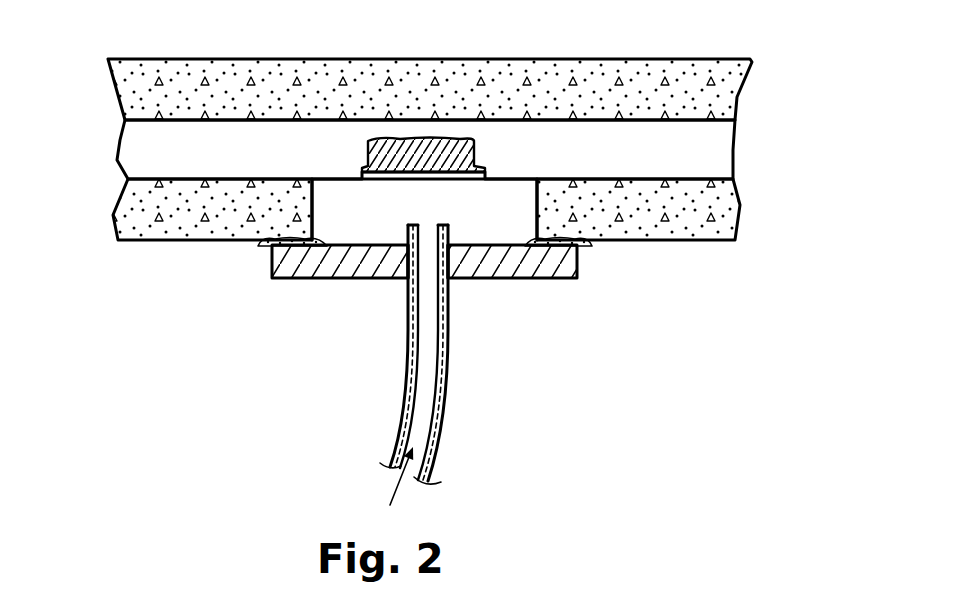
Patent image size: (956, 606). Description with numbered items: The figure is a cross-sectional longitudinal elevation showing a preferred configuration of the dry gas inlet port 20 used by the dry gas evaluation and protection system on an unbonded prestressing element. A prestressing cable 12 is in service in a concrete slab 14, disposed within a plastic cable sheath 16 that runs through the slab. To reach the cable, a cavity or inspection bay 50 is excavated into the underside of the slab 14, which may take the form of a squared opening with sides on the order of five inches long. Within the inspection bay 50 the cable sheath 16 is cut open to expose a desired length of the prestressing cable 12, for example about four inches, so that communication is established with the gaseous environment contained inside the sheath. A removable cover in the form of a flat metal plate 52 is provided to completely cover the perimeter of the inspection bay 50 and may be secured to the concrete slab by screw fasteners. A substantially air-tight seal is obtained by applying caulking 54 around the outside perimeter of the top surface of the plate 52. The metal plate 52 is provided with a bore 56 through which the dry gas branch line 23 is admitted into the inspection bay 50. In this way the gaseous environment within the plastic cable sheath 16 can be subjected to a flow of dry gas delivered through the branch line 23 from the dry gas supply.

The prestressing cable 12 is at (416, 138).
The slab 14 is at (737, 97).
The cable sheath 16 is at (128, 150).
The dry gas inlet port 20 is at (531, 412).
The dry gas branch line 23 is at (395, 426).
The inspection bay 50 is at (492, 212).
The flat metal plate 52 is at (305, 278).
The caulking 54 is at (259, 248).
The bore 56 is at (470, 279).